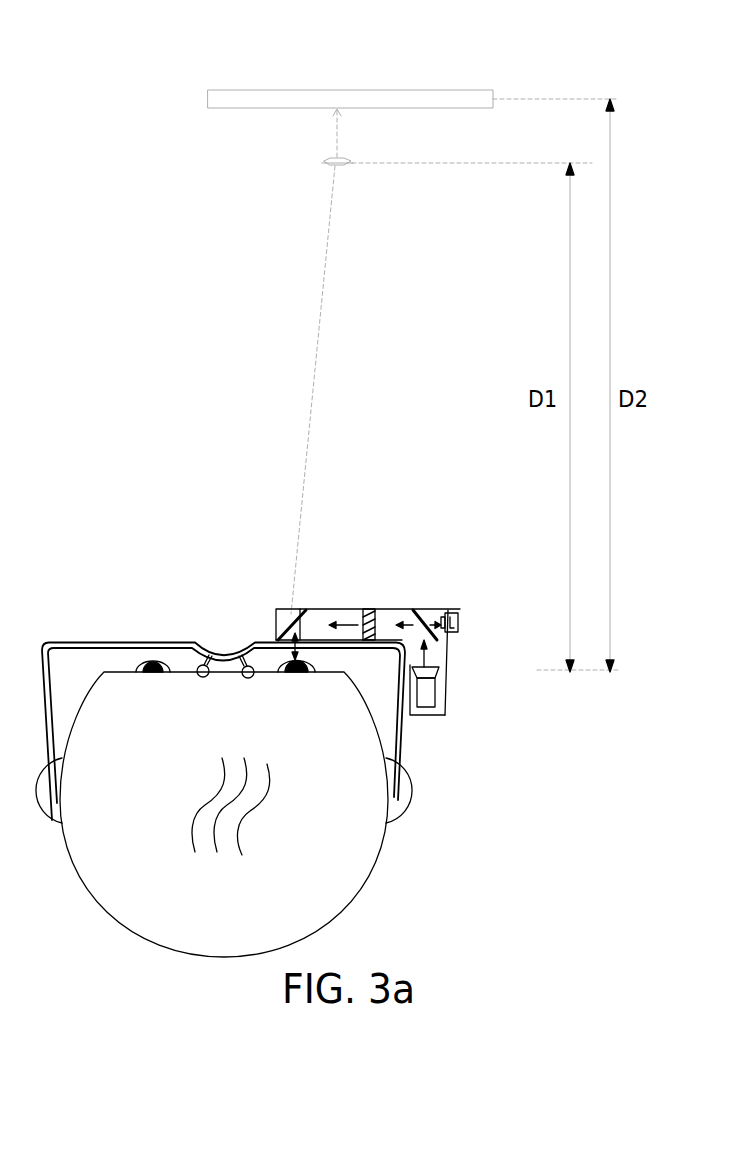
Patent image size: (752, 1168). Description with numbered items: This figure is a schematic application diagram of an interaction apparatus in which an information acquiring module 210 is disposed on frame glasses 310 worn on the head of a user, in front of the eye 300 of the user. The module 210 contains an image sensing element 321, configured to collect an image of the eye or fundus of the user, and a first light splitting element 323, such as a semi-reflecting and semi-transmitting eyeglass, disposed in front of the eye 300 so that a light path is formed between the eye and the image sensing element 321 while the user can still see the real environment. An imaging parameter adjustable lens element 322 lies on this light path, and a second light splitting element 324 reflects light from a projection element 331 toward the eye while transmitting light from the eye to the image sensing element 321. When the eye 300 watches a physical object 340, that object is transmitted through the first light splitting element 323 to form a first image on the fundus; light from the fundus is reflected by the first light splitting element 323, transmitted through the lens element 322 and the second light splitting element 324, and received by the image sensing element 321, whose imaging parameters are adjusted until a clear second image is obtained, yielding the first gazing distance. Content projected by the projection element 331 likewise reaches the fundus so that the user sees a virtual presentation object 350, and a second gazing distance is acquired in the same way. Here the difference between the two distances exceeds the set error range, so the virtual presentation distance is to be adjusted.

The physical object 340 is at (377, 90).
The virtual presentation object 350 is at (318, 162).
The eye 300 is at (288, 668).
The frame glasses 310 is at (133, 652).
The information acquiring module 210 is at (414, 627).
The image sensing element 321 is at (458, 614).
The imaging parameter adjustable lens element 322 is at (368, 609).
The first light splitting element 323 is at (301, 612).
The second light splitting element 324 is at (415, 610).
The projection element 331 is at (427, 697).